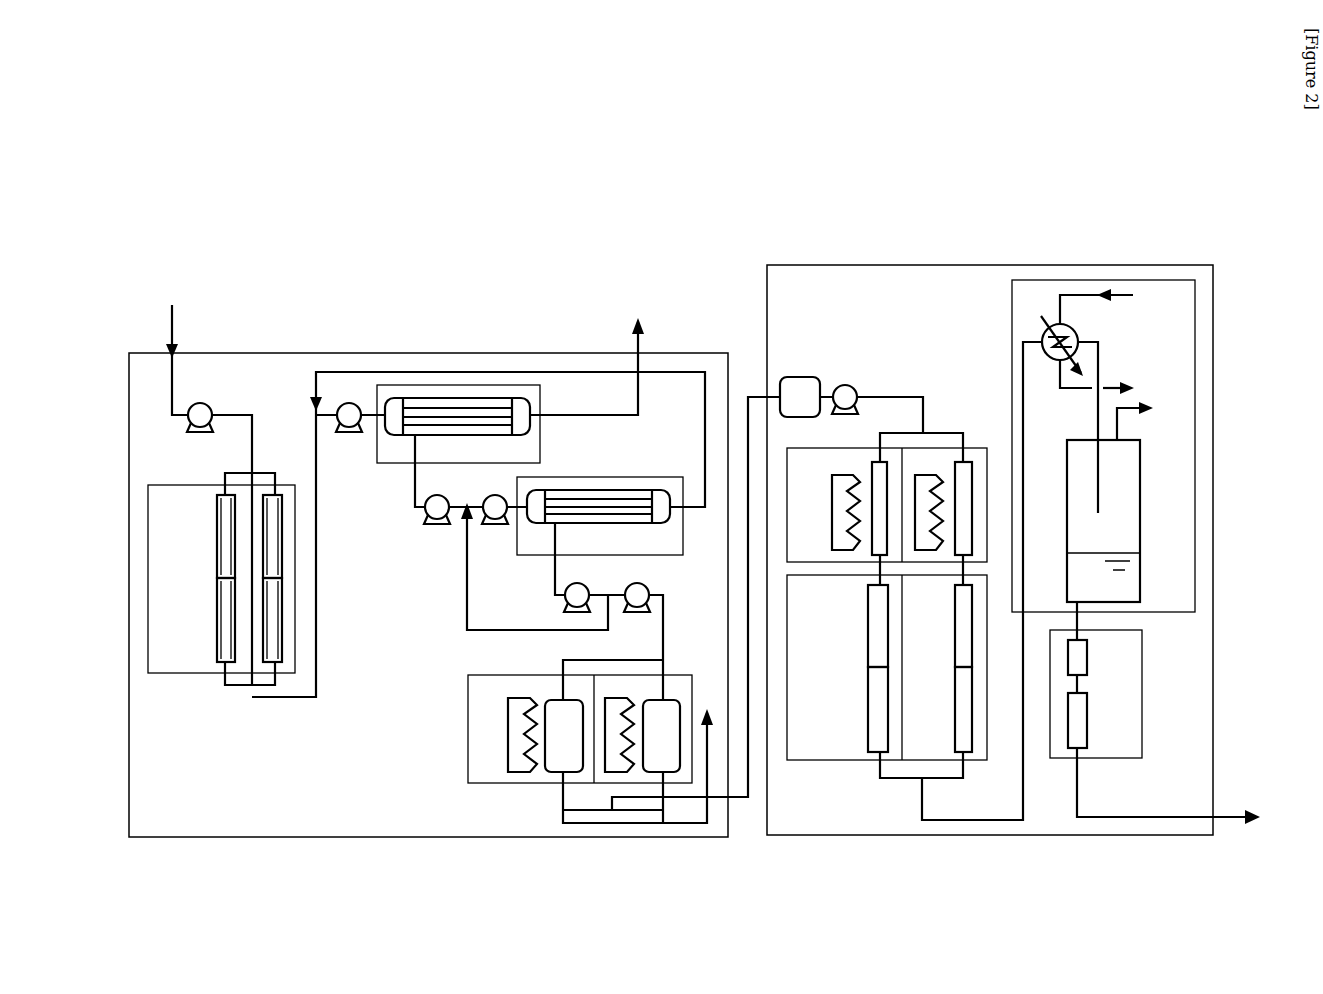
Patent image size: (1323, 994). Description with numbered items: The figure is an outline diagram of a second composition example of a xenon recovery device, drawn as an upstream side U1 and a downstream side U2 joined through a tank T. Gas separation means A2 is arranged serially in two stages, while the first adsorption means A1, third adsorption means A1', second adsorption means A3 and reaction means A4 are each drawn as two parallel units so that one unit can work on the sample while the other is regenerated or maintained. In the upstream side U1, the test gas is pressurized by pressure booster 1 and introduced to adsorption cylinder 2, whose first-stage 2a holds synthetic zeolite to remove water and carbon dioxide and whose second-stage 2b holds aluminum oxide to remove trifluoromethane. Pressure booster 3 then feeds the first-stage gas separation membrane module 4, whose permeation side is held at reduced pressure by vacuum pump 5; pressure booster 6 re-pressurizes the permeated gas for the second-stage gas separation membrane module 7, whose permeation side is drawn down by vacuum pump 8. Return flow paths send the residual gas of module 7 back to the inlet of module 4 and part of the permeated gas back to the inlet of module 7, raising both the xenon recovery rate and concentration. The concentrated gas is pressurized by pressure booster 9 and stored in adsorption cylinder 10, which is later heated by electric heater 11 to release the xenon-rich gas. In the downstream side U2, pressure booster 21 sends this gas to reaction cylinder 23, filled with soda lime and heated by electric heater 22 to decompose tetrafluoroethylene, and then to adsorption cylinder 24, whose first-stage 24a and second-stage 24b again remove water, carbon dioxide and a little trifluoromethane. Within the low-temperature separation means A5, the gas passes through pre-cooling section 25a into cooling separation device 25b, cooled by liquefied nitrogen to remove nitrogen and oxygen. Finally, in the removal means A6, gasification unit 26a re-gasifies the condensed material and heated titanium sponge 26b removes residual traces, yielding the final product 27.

The pressure booster 1 is at (200, 429).
The adsorption cylinder 2 is at (218, 578).
The first-stage 2a is at (175, 560).
The second-stage 2b is at (175, 560).
The pressure booster 3 is at (349, 429).
The gas separation membrane module 4 is at (457, 431).
The vacuum pump 5 is at (437, 524).
The pressure booster 6 is at (495, 524).
The gas separation membrane module 7 is at (598, 522).
The vacuum pump 8 is at (580, 588).
The pressure booster 9 is at (641, 588).
The adsorption cylinder 10 is at (557, 726).
The electric heater 11 is at (504, 735).
The pressure booster 21 is at (845, 386).
The electric heater 22 is at (827, 512).
The reaction cylinder 23 is at (863, 505).
The adsorption cylinder 24 is at (878, 668).
The first-stage 24a is at (822, 668).
The second-stage 24b is at (822, 668).
The pre-cooling section 25a is at (1078, 344).
The cooling separation device 25b is at (1124, 521).
The gasification unit 26a is at (1097, 657).
The titanium sponge 26b is at (1097, 720).
The final product 27 is at (1230, 807).
The tank T is at (800, 386).
The upstream side of this device U1 is at (429, 583).
The downstream side of this device U2 is at (973, 550).
The first adsorption means A1 is at (227, 566).
The third adsorption means A1' is at (893, 681).
The gas separation means A2 is at (530, 470).
The second adsorption means A3 is at (584, 717).
The reaction means A4 is at (894, 493).
The low-temperature separation means A5 is at (1087, 446).
The removal means comprising getter A6 is at (1110, 694).